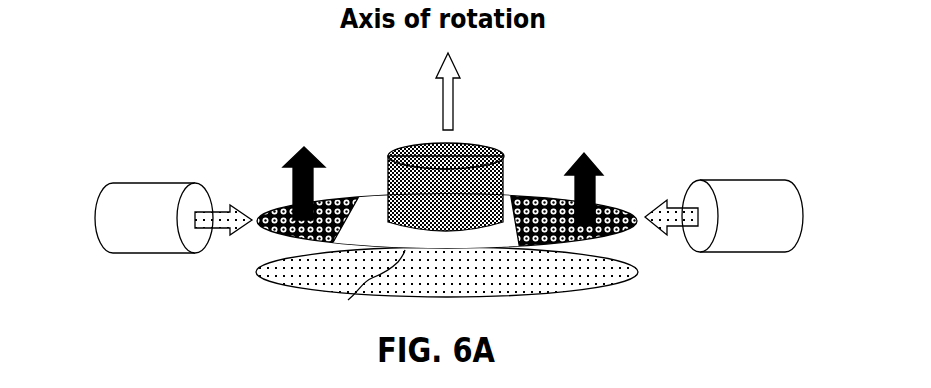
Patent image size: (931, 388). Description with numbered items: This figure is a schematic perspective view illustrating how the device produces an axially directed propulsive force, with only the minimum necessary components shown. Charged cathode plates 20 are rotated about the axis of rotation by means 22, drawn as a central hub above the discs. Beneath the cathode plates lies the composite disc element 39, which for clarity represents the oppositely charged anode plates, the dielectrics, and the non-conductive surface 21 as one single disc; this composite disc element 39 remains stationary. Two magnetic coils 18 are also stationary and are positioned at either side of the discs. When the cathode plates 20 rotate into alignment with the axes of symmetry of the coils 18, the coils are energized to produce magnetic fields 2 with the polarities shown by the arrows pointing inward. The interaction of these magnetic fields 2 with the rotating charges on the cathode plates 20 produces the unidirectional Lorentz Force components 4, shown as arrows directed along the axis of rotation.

The magnetic fields 2 is at (232, 208).
The Lorentz Force components 4 is at (302, 147).
The magnetic coils 18 is at (157, 183).
The charged cathode plates 20 is at (270, 233).
The non-conductive surface 21 is at (360, 286).
The means for rotating 22 is at (423, 143).
The composite disc element 39 is at (503, 298).